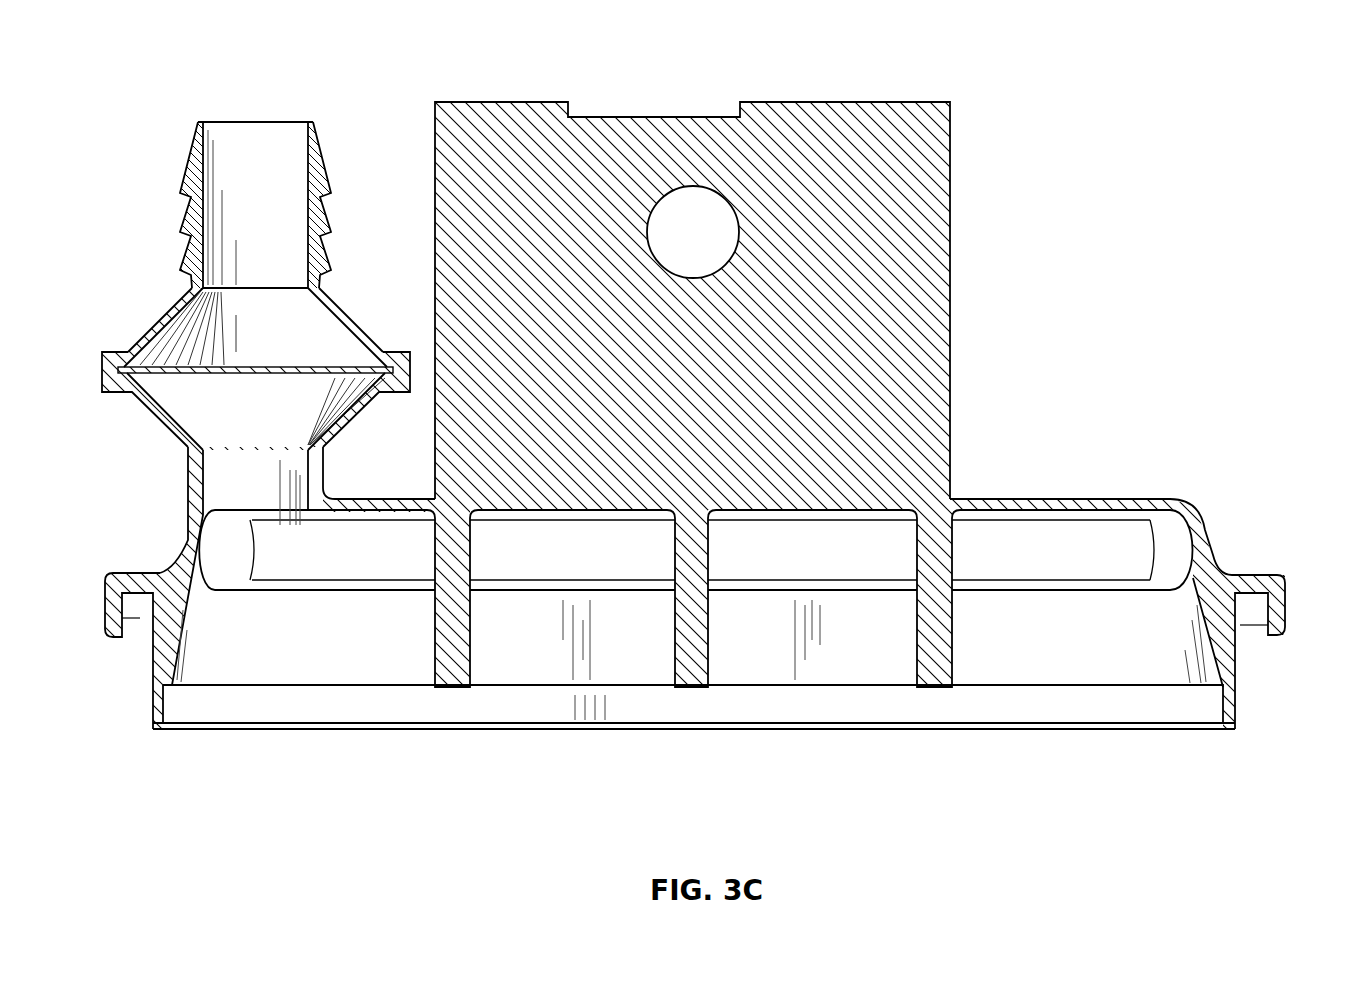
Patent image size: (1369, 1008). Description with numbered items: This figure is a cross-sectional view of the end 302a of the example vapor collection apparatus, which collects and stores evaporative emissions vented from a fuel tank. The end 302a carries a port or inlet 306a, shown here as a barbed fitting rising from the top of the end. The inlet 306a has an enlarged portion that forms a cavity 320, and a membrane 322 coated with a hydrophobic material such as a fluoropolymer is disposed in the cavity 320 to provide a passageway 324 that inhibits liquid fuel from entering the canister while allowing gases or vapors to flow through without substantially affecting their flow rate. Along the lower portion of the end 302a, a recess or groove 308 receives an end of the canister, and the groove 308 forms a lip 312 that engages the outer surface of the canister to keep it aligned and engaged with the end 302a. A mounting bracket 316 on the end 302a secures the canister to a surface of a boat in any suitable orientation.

The end 302a is at (684, 378).
The passageway 324 is at (258, 138).
The port or inlet 306a is at (190, 166).
The cavity 320 is at (230, 312).
The membrane 322 is at (182, 368).
The mounting bracket 316 is at (942, 205).
The lip 312 is at (1278, 600).
The recess or groove 308 is at (138, 618).